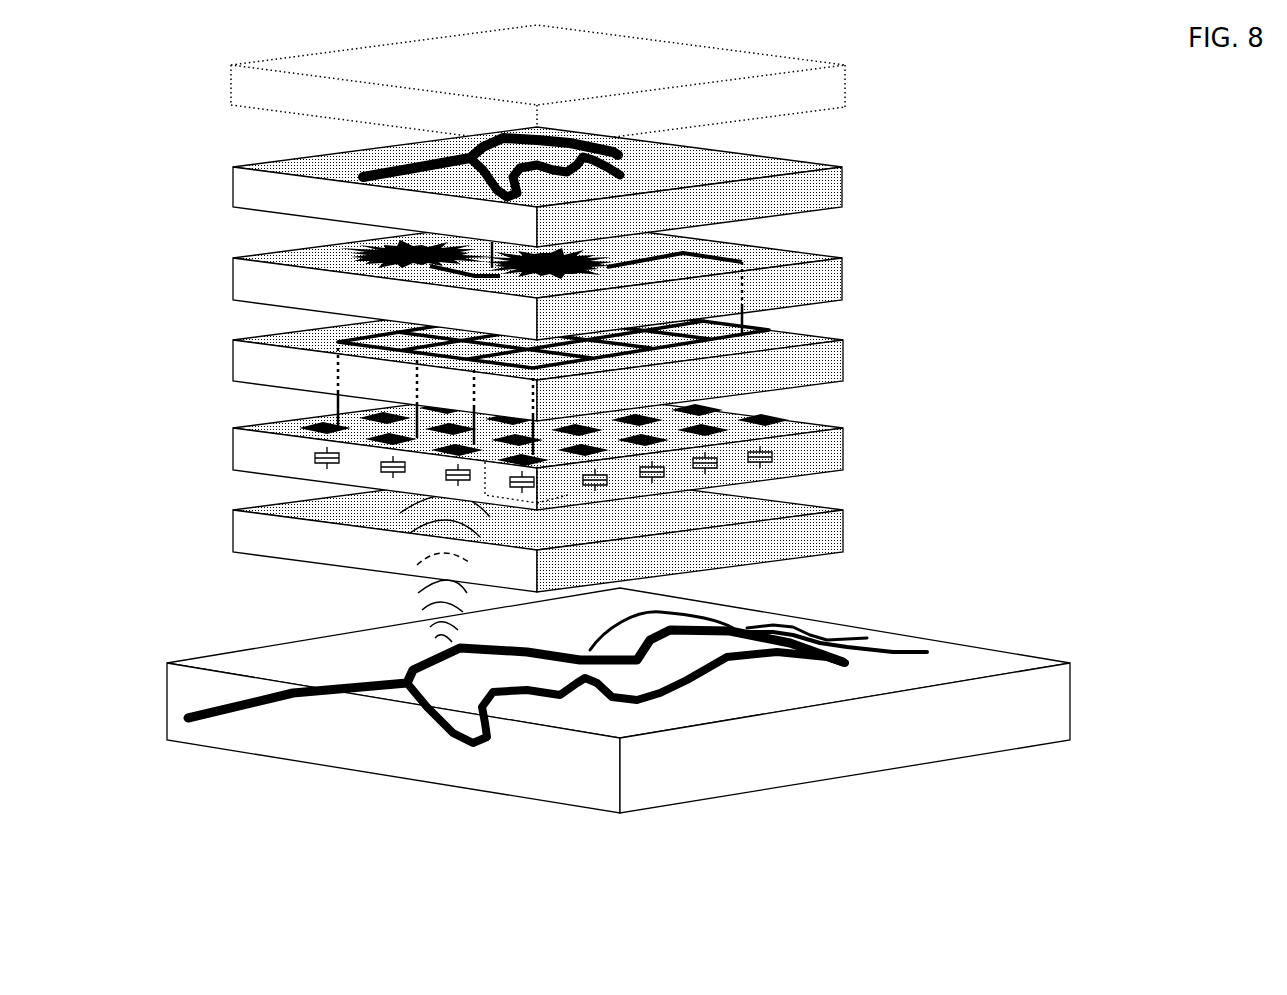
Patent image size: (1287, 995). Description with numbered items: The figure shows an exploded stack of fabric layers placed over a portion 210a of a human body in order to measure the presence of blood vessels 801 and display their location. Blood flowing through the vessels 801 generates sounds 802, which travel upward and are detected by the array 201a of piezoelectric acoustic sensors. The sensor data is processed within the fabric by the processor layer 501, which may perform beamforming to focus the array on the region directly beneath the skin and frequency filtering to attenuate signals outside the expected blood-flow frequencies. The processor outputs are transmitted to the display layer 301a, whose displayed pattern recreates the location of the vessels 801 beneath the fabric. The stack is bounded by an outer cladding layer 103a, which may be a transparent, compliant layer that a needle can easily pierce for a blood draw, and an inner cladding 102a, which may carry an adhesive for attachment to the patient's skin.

The outer cladding layer 103a is at (808, 93).
The display layer 301a is at (822, 200).
The processor layer 501 is at (822, 290).
The array of acoustic sensors 201a is at (827, 453).
The inner cladding 102a is at (827, 527).
The portion of a human body 210a is at (347, 733).
The blood vessels 801 is at (337, 680).
The sounds 802 is at (415, 603).